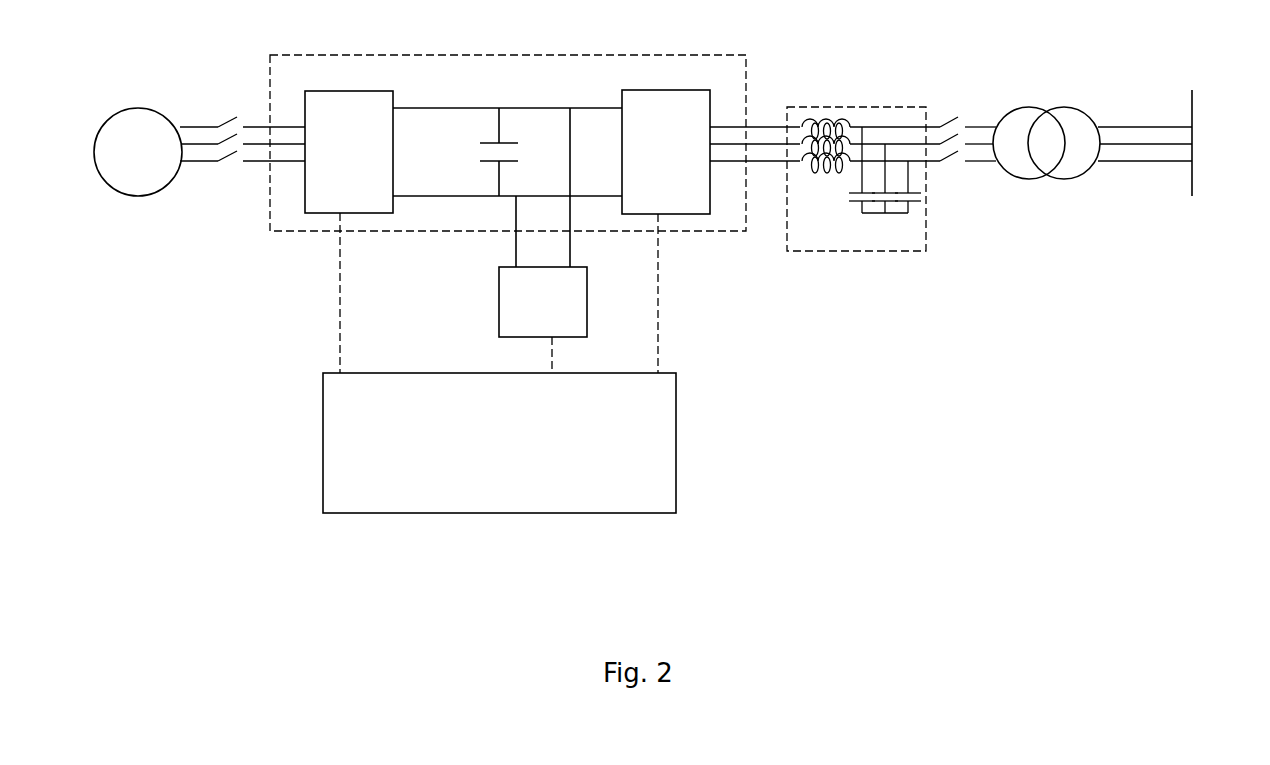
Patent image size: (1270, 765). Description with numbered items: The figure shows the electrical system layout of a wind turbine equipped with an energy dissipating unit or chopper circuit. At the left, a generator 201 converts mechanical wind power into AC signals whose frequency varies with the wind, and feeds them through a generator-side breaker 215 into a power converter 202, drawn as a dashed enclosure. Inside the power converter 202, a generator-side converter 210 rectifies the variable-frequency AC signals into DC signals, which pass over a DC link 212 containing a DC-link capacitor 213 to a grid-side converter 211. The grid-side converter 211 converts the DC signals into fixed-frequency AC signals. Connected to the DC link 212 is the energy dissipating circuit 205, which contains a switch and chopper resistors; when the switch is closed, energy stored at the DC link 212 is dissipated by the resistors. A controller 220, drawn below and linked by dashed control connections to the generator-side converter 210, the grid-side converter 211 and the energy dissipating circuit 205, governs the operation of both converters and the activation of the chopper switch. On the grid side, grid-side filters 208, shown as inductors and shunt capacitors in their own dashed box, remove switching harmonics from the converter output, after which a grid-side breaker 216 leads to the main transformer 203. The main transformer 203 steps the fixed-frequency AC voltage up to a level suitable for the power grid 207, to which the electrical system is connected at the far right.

The generator 201 is at (156, 114).
The generator-side breaker 215 is at (260, 123).
The power converter 202 is at (540, 131).
The generator-side converter 210 is at (355, 129).
The DC link 212 is at (412, 108).
The DC-link capacitor 213 is at (472, 152).
The grid-side converter 211 is at (672, 131).
The energy dissipating circuit 205 is at (548, 304).
The controller 220 is at (372, 409).
The grid-side filters 208 is at (863, 140).
The grid-side breaker 216 is at (967, 124).
The main transformer 203 is at (1092, 105).
The power grid 207 is at (1225, 130).